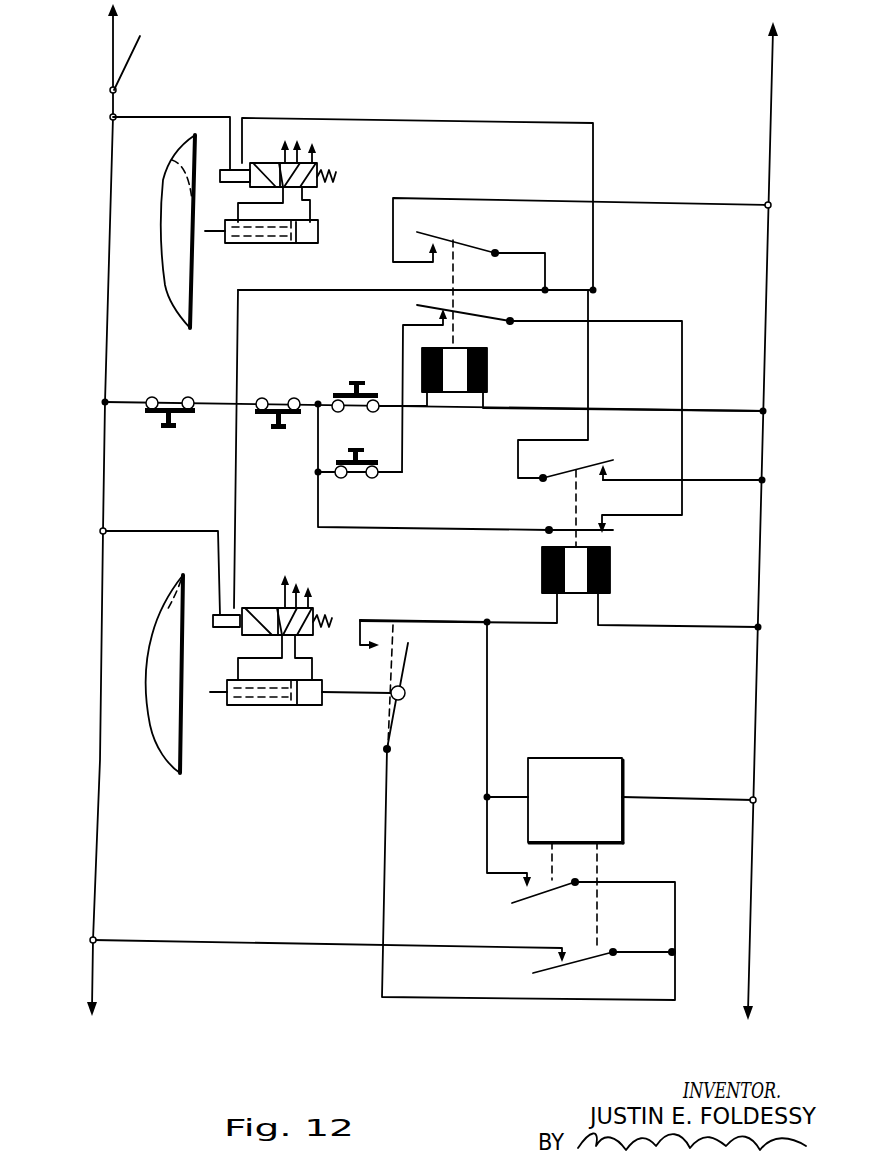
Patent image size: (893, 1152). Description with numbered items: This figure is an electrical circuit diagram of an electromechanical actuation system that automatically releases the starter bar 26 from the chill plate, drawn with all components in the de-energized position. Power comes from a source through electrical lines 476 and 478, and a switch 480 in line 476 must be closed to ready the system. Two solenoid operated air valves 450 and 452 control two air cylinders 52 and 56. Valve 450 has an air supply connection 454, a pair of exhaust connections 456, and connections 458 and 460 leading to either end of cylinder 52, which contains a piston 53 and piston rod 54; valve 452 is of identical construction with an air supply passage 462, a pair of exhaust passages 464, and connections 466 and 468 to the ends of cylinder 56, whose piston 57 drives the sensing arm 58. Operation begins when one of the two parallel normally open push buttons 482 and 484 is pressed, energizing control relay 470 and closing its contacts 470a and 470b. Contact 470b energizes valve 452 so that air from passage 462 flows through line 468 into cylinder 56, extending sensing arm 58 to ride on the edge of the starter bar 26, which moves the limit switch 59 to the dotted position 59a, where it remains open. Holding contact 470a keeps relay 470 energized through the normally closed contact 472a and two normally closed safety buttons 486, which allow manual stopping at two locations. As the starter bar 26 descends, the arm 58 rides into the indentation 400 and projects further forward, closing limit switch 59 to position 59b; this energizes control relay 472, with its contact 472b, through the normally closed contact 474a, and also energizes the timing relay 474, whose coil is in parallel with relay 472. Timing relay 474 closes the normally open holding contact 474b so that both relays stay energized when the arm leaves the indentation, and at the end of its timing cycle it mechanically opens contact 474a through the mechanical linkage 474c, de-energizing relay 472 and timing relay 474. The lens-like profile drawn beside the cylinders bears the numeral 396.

The starter bar 26 is at (190, 257).
The air cylinder 52 is at (270, 243).
The piston 53 is at (300, 243).
The piston rod 54 is at (218, 235).
The air cylinder 56 is at (262, 705).
The piston 57 is at (300, 705).
The sensing arm 58 is at (217, 696).
The limit switch 59 is at (406, 652).
The dotted line position of limit switch 59a is at (398, 645).
The dotted line position of limit switch 59b is at (384, 715).
The lens holder 396 is at (161, 231).
The indentation 400 is at (157, 642).
The solenoid operated air valve 450 is at (318, 188).
The solenoid operated air valve 452 is at (313, 636).
The air supply connection 454 is at (297, 140).
The exhaust connections 456 is at (282, 150).
The connection 458 is at (248, 206).
The connection 460 is at (310, 212).
The air supply passage 462 is at (296, 583).
The air exhaust passages 464 is at (282, 588).
The connection 466 is at (240, 668).
The connection 468 is at (312, 668).
The control relay 470 is at (455, 392).
The holding contact 470a is at (470, 311).
The contact 470b is at (456, 227).
The control relay 472 is at (612, 570).
The contact 472a is at (564, 528).
The contact 472b is at (590, 463).
The timing relay 474 is at (614, 773).
The contact 474a is at (572, 966).
The holding contact 474b is at (535, 897).
The mechanical linkage 474c is at (597, 905).
The electrical line 476 is at (111, 237).
The electrical line 478 is at (770, 92).
The switch 480 is at (130, 60).
The push button 482 is at (370, 390).
The push button 484 is at (358, 478).
The buttons 486 is at (155, 418).